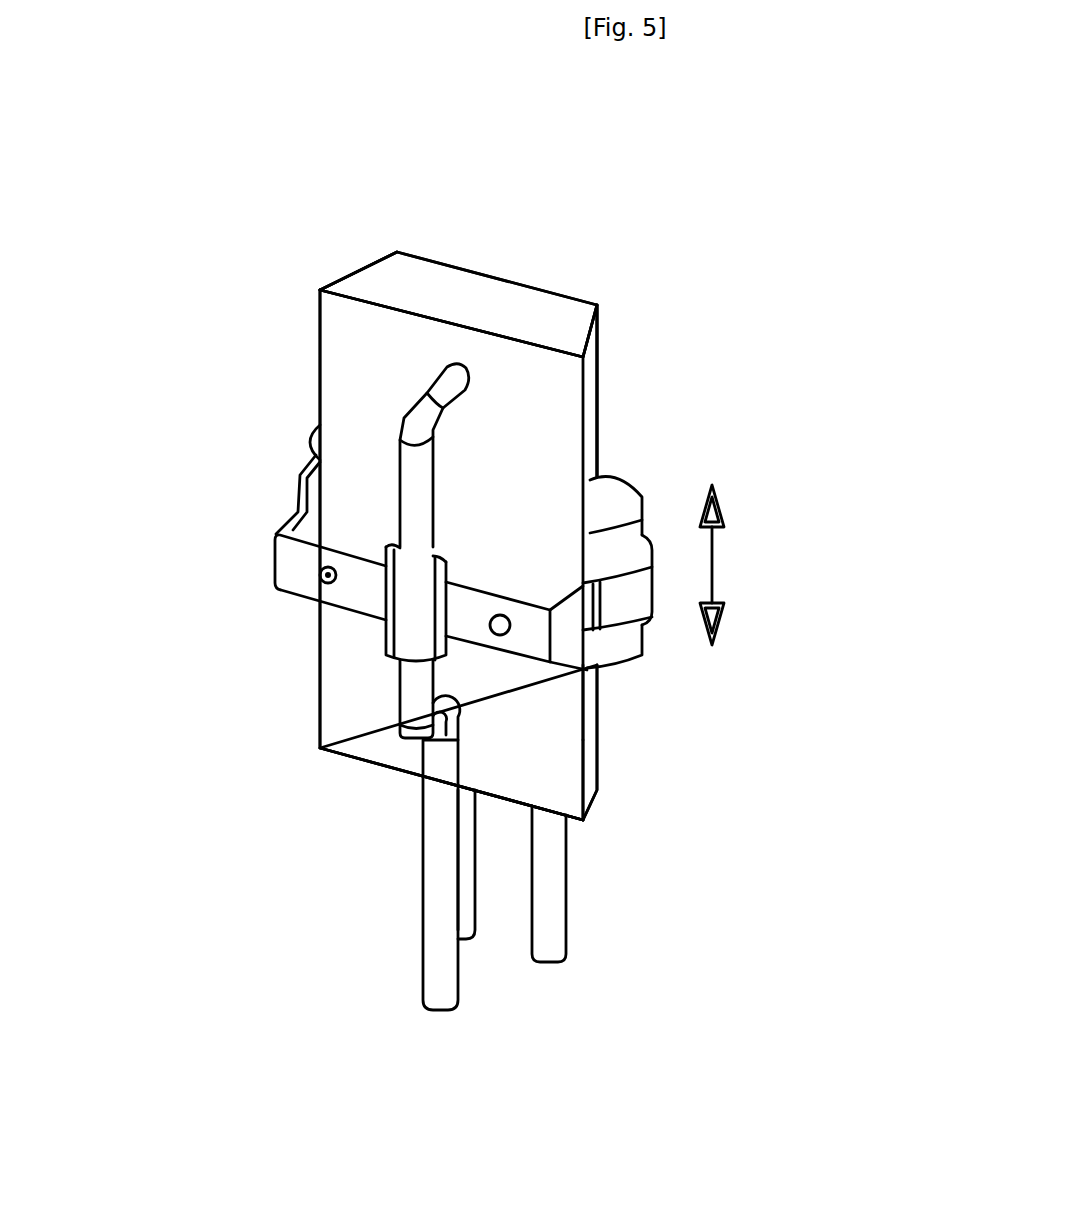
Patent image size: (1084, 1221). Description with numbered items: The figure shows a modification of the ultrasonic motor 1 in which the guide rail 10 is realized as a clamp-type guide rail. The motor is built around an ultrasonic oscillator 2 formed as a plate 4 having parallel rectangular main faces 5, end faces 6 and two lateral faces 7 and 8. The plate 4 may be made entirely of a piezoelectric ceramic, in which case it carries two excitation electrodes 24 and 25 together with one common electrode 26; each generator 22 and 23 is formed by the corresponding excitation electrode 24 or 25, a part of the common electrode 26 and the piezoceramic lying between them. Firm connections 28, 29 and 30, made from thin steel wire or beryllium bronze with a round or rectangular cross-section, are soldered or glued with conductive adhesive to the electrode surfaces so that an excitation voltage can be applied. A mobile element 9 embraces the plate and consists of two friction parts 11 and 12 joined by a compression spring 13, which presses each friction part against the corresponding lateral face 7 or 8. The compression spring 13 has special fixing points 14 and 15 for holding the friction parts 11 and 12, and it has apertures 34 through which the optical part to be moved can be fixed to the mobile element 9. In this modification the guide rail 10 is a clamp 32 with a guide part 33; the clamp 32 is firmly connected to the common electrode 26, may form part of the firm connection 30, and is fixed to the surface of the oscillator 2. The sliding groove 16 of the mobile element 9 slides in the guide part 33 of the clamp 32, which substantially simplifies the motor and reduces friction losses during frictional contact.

The ultrasonic motor 1 is at (557, 233).
The ultrasonic oscillator 2 is at (483, 300).
The plate 4 is at (430, 292).
The main faces 5 is at (550, 292).
The end faces 6 is at (383, 283).
The lateral face 7 is at (597, 397).
The lateral face 8 is at (315, 345).
The mobile element 9 is at (360, 636).
The guide rail 10 is at (400, 708).
The friction part 11 is at (302, 456).
The friction part 12 is at (613, 500).
The compression spring 13 is at (533, 635).
The fixing point 14 is at (650, 603).
The fixing point 15 is at (295, 502).
The sliding groove 16 is at (440, 550).
The generator 22 is at (597, 432).
The generator 23 is at (593, 737).
The excitation electrode 24 is at (593, 710).
The excitation electrode 25 is at (597, 352).
The common electrode 26 is at (510, 742).
The firm connection 28 is at (547, 912).
The firm connection 29 is at (477, 913).
The firm connection 30 is at (445, 911).
The clamp 32 is at (413, 680).
The guide part 33 is at (417, 500).
The apertures 34 is at (319, 573).